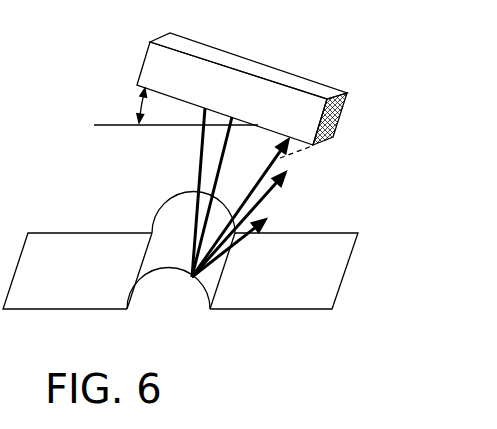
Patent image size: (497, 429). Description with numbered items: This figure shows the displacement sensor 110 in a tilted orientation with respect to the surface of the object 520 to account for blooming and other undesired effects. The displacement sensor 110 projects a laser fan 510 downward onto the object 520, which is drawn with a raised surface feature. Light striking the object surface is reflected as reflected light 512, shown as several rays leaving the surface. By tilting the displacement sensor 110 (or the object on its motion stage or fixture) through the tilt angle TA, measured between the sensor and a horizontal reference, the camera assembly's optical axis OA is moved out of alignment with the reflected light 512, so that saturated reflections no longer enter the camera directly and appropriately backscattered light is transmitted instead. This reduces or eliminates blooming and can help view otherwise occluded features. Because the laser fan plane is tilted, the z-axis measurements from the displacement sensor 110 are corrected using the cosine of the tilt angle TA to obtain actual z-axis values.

The displacement sensor 110 is at (225, 91).
The laser fan 510 is at (189, 178).
The reflected light 512 is at (248, 236).
The object 520 is at (260, 298).
The tilt angle TA is at (138, 102).
The optical axis OA is at (302, 149).